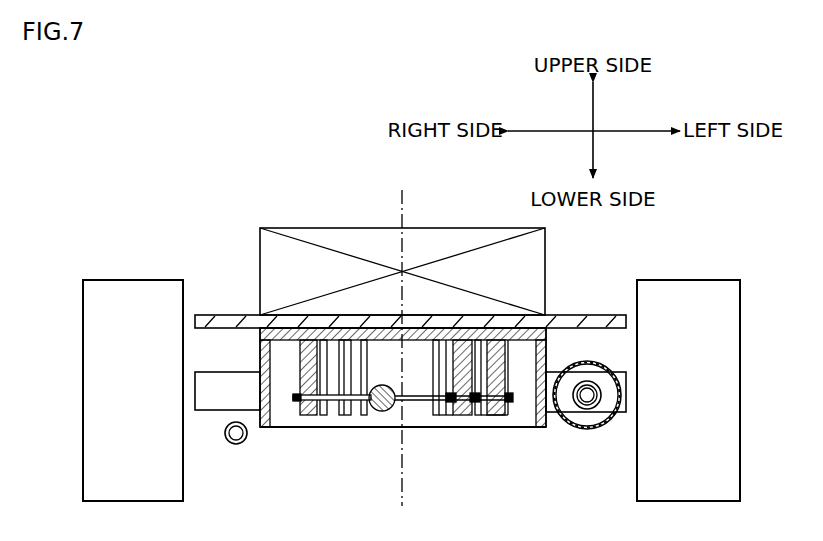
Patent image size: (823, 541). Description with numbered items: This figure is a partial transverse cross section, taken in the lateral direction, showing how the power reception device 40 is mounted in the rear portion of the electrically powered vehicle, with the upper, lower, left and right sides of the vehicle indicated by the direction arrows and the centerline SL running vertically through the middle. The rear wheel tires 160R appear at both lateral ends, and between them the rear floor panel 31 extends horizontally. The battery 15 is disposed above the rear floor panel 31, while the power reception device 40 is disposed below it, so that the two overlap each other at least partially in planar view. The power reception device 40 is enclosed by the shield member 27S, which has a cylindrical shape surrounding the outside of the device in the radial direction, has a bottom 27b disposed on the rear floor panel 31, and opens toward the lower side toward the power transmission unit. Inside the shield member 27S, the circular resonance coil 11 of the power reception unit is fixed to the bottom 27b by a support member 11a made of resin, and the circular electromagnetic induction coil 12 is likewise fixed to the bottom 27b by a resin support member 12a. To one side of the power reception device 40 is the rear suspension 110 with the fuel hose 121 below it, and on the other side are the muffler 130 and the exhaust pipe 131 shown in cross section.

The battery 15 is at (362, 242).
The bottom 27b is at (296, 327).
The shield member 27S is at (263, 408).
The rear floor panel 31 is at (213, 322).
The power reception device 40 is at (354, 432).
The resonance coil 11 is at (475, 398).
The support member 11a is at (460, 368).
The electromagnetic induction coil 12 is at (500, 398).
The support member 12a is at (490, 368).
The rear suspension 110 is at (215, 392).
The fuel hose 121 is at (244, 441).
The muffler 130 is at (601, 427).
The exhaust pipe 131 is at (578, 409).
The rear wheel tire 160R is at (134, 297).
The center line SL is at (405, 206).